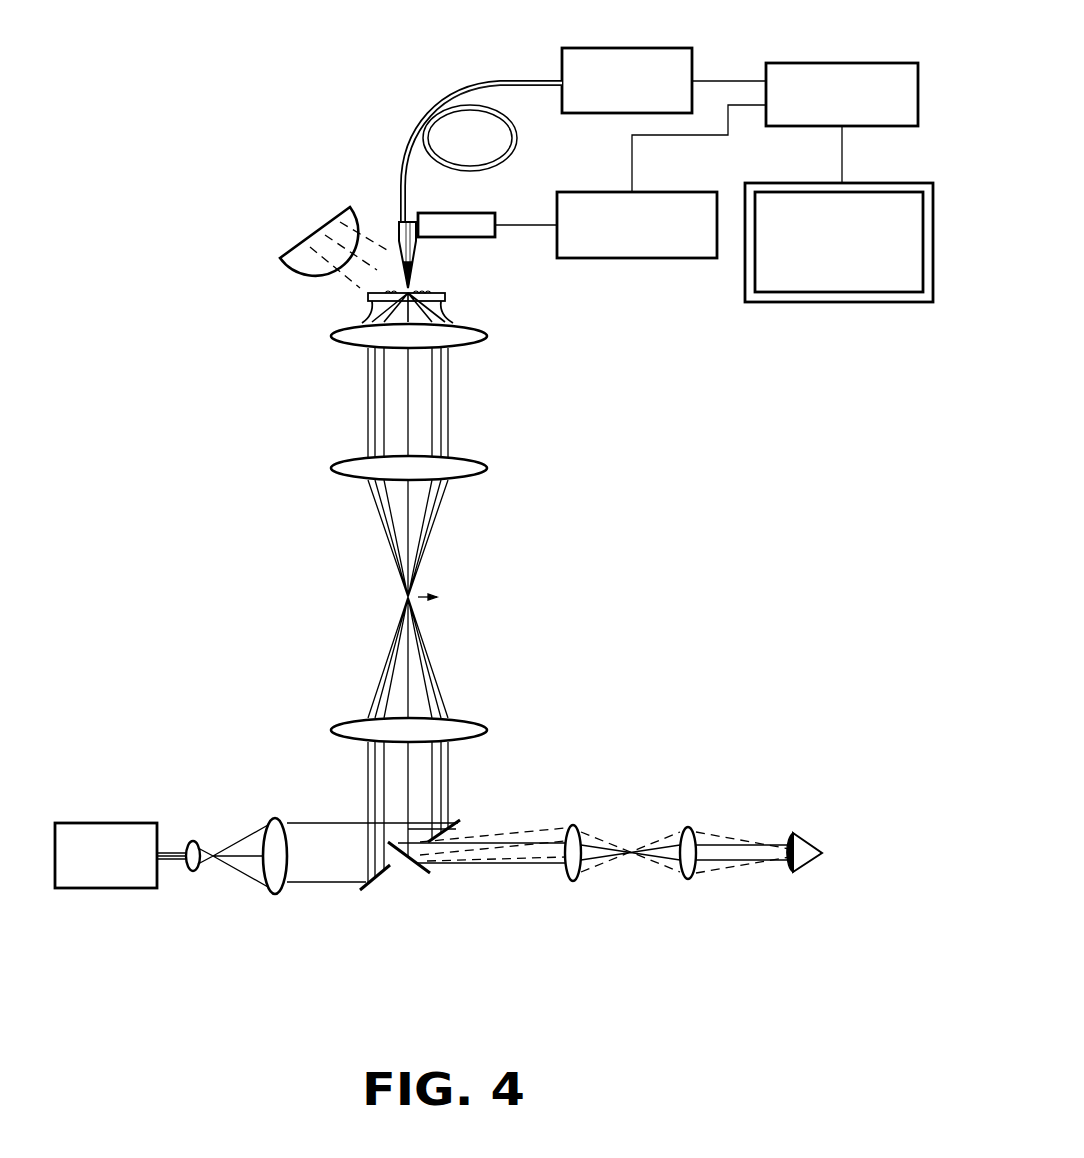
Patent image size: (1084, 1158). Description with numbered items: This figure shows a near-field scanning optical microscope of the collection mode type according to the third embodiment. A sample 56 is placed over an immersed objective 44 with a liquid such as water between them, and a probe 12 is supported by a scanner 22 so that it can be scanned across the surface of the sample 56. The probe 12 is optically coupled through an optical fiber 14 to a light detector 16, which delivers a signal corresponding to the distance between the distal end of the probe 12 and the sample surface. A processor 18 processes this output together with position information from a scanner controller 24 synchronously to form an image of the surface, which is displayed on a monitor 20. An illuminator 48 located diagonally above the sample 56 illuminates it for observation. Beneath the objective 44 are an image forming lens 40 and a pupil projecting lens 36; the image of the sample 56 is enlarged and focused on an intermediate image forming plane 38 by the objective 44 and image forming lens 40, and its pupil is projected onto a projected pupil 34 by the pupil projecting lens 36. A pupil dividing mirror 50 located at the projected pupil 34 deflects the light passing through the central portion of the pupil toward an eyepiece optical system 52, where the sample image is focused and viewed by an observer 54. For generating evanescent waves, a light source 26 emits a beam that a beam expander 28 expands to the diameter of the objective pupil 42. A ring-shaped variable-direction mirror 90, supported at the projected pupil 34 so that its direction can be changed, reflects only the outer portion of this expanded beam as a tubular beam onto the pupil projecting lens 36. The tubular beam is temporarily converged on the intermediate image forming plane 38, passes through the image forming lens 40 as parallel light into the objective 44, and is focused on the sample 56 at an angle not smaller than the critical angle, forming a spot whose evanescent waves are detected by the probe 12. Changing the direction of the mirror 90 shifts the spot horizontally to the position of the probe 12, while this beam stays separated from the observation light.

The probe 12 is at (417, 257).
The optical fiber 14 is at (468, 86).
The light detector 16 is at (621, 47).
The processor 18 is at (839, 63).
The monitor 20 is at (841, 302).
The scanner 22 is at (486, 213).
The scanner controller 24 is at (647, 258).
The light source 26 is at (105, 888).
The beam expander 28 is at (285, 900).
The projected pupil 34 is at (360, 857).
The pupil projecting lens 36 is at (320, 730).
The intermediate image forming plane 38 is at (387, 598).
The image forming lens 40 is at (320, 467).
The objective pupil 42 is at (474, 405).
The immersed objective 44 is at (318, 292).
The illuminator 48 is at (283, 205).
The pupil dividing mirror 50 is at (424, 876).
The eyepiece optical system 52 is at (700, 812).
The observer 54 is at (800, 840).
The sample 56 is at (440, 288).
The variable-direction mirror 90 is at (376, 888).